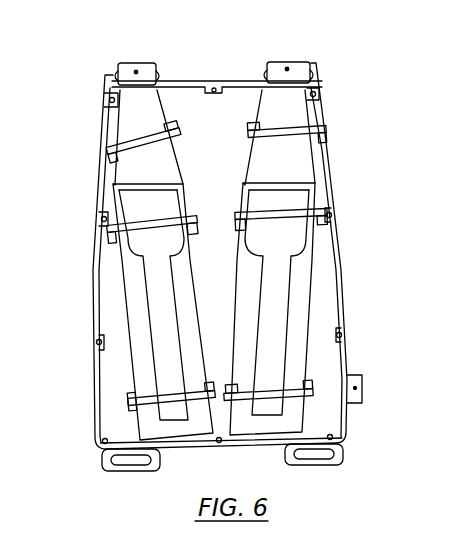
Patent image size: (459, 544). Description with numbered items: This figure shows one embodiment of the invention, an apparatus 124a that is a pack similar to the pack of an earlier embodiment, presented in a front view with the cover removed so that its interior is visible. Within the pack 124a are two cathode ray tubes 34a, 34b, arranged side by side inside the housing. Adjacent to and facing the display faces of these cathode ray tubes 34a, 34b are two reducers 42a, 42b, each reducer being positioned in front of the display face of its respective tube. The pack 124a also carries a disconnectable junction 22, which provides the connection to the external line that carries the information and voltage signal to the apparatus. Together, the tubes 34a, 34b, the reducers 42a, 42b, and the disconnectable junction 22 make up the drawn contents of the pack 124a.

The apparatus 124a is at (332, 183).
The reducer 42a is at (158, 103).
The reducer 42b is at (312, 118).
The cathode ray tube 34a is at (150, 305).
The cathode ray tube 34b is at (293, 283).
The disconnectable junction 22 is at (362, 381).